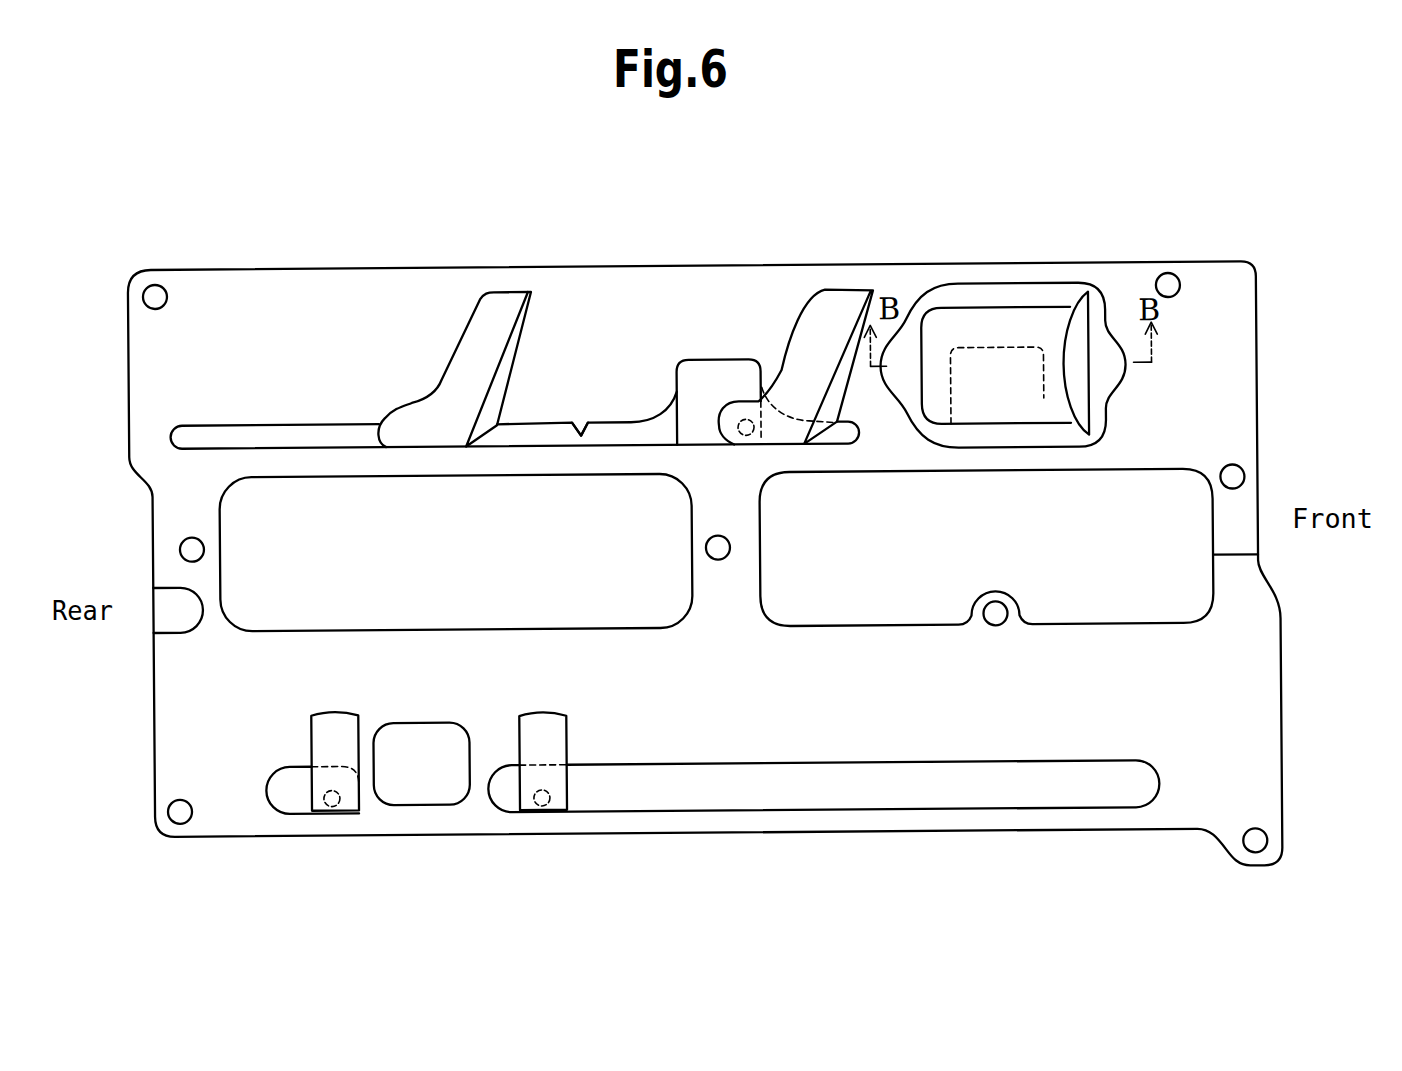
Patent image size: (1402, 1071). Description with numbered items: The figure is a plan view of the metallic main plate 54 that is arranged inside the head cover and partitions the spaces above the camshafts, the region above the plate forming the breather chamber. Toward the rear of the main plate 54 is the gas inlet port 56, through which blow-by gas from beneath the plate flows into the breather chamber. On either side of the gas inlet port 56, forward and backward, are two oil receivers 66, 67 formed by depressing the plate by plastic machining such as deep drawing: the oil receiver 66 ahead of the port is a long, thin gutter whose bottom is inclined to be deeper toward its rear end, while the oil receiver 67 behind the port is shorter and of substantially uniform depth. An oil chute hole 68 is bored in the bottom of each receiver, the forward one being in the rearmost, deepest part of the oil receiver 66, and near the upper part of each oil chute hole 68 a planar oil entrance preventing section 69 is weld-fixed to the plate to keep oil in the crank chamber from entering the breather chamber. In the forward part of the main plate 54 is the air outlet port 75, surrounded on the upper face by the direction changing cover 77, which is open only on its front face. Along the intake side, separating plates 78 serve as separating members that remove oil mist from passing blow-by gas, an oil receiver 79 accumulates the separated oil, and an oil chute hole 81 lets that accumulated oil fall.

The main plate 54 is at (1250, 396).
The gas inlet port 56 is at (412, 801).
The oil receiver 66 is at (735, 813).
The oil receiver 67 is at (293, 815).
The oil chute hole 68 is at (330, 808).
The oil entrance preventing section 69 is at (315, 732).
The air outlet port 75 is at (1042, 407).
The direction changing cover 77 is at (992, 300).
The separating plate 78 is at (520, 343).
The oil receiver 79 is at (587, 430).
The oil chute hole 81 is at (745, 441).